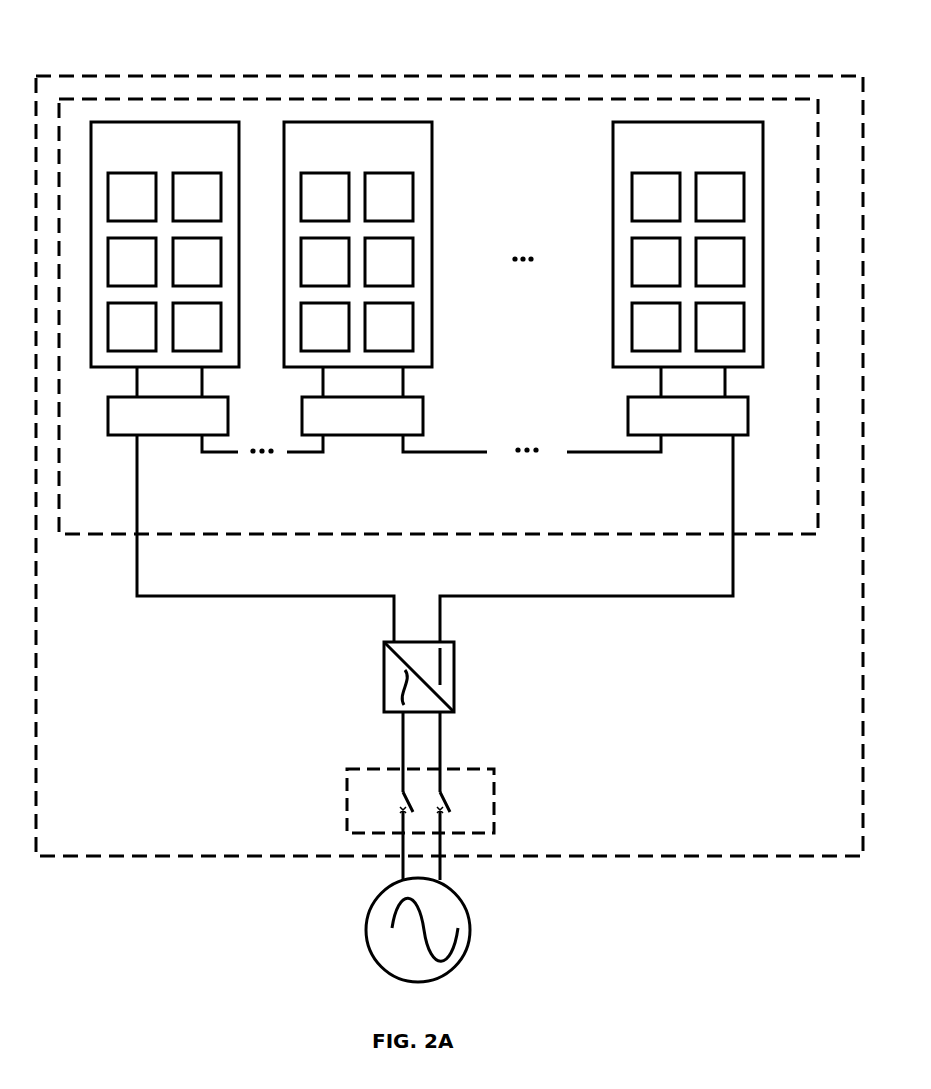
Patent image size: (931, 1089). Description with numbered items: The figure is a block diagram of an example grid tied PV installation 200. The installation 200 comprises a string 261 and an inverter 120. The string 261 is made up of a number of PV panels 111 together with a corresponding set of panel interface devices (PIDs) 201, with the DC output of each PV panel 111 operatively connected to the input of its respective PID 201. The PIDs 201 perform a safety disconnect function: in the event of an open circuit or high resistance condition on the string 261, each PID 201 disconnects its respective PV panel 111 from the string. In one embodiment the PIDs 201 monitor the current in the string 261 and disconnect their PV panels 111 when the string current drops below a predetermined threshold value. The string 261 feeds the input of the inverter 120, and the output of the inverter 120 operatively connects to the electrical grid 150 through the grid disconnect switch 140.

The grid tied PV installation 200 is at (118, 66).
The string 261 is at (510, 86).
The PV panel 111 is at (224, 161).
The panel interface device 201 is at (203, 425).
The inverter 120 is at (454, 667).
The grid disconnect switch 140 is at (494, 785).
The electrical grid 150 is at (471, 930).